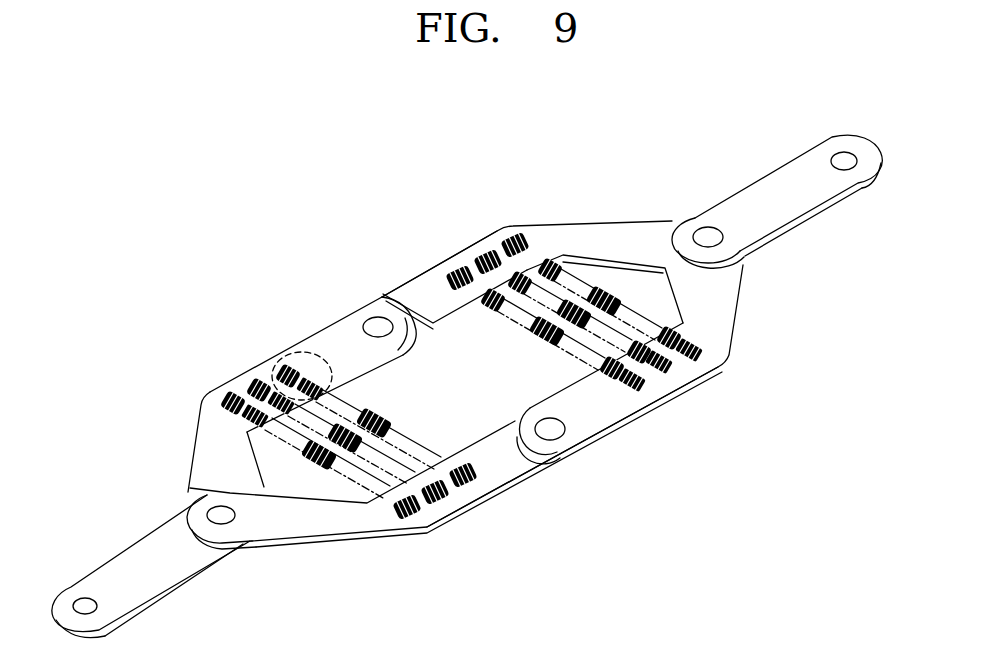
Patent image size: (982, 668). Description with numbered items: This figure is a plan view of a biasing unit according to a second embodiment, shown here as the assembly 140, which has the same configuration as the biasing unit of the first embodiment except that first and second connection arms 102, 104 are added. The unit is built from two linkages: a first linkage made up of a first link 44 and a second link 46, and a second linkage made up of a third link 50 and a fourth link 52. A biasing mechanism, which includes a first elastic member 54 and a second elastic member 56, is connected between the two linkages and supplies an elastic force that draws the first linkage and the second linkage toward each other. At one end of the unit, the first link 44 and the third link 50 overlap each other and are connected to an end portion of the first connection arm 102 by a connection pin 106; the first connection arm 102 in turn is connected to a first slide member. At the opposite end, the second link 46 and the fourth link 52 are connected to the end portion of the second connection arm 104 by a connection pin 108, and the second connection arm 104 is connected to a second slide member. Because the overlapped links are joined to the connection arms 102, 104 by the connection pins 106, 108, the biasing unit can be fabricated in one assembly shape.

The frame assembly 140 is at (304, 246).
The first link 44 is at (335, 335).
The second link 46 is at (432, 275).
The third link 50 is at (507, 475).
The fourth link 52 is at (627, 408).
The first elastic member 54 is at (313, 462).
The second elastic member 56 is at (603, 296).
The first connection arm 102 is at (125, 560).
The second connection arm 104 is at (776, 182).
The connection pin 106 is at (203, 514).
The connection pin 108 is at (700, 232).